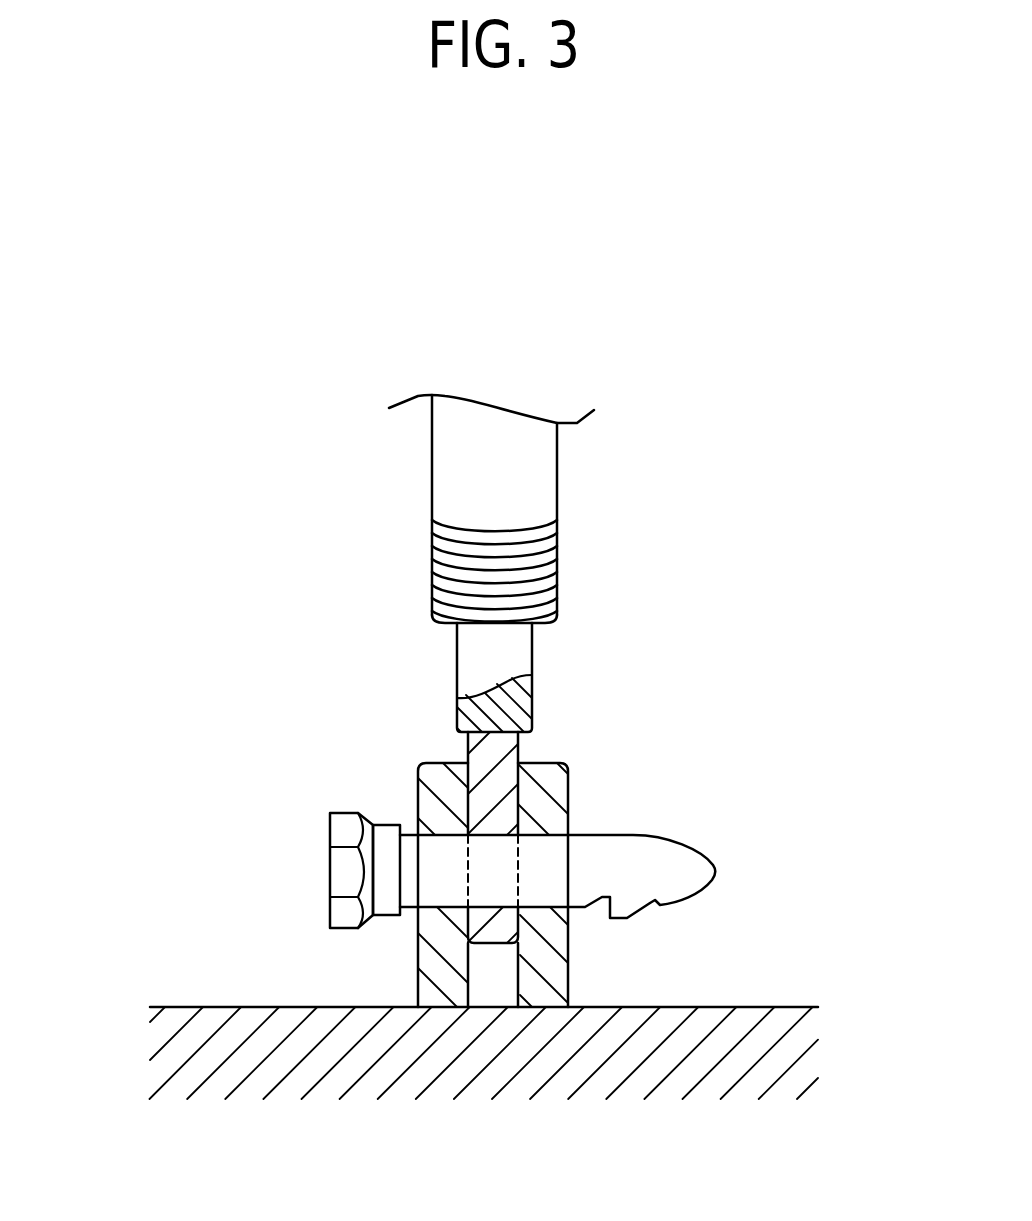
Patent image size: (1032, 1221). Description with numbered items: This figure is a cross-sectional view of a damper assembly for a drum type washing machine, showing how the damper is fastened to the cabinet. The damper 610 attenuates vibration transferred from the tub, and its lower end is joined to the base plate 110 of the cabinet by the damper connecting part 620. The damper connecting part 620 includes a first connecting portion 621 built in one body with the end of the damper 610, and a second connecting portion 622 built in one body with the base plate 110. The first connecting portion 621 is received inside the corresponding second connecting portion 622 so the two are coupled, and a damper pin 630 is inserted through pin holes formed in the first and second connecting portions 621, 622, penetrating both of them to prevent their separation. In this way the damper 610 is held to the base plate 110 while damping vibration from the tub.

The base plate 110 is at (197, 1029).
The damper 610 is at (535, 477).
The damper connecting part 620 is at (750, 673).
The first connecting portion 621 is at (507, 748).
The second connecting portion 622 is at (558, 787).
The damper pin 630 is at (703, 832).